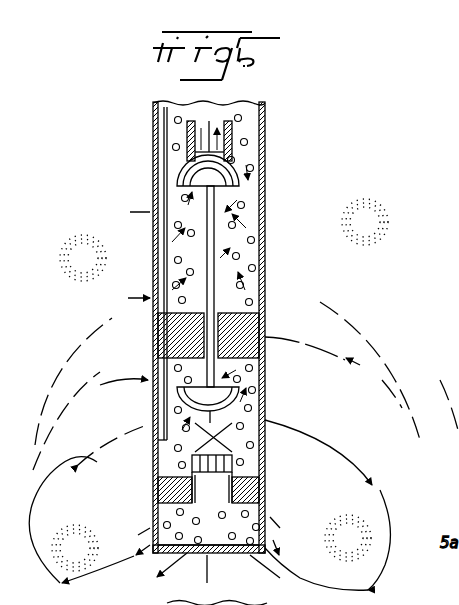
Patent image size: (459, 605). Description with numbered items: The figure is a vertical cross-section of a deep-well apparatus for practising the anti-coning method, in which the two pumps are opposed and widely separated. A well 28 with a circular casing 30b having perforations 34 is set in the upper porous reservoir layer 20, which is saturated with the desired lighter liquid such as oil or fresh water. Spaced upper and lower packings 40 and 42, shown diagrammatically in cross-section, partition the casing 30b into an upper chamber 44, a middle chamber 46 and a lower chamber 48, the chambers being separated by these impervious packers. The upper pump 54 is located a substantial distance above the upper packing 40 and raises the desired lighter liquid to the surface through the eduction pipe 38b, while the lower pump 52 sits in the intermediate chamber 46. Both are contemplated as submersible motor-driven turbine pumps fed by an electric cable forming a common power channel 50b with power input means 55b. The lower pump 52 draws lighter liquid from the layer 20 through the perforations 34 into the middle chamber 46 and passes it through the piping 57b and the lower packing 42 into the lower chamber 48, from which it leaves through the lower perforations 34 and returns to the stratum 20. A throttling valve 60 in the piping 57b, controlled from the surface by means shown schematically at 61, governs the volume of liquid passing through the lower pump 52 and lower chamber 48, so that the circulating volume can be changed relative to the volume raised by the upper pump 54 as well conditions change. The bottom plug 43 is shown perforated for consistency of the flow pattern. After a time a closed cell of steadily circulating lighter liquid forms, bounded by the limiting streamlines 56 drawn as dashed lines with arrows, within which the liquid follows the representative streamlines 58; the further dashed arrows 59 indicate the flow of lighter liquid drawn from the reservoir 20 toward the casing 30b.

The upper porous reservoir layer 20 is at (220, 385).
The well 28 is at (265, 268).
The well casing 30b is at (265, 170).
The perforations 34 is at (150, 250).
The eduction pipe 38b is at (232, 122).
The upper packing 40 is at (264, 318).
The lower packing 42 is at (265, 490).
The bottom plug 43 is at (195, 553).
The upper chamber 44 is at (223, 286).
The middle chamber 46 is at (222, 460).
The lower chamber 48 is at (212, 525).
The common power channel 50b is at (262, 234).
The lower pump 52 is at (160, 412).
The upper pump 54 is at (192, 178).
The power input means 55b is at (209, 150).
The limiting streamlines 56 is at (245, 403).
The piping 57b is at (265, 415).
The representative streamlines 58 is at (215, 505).
The flow path 59 is at (112, 318).
The throttling valve 60 is at (214, 438).
The valve control means 61 is at (162, 160).